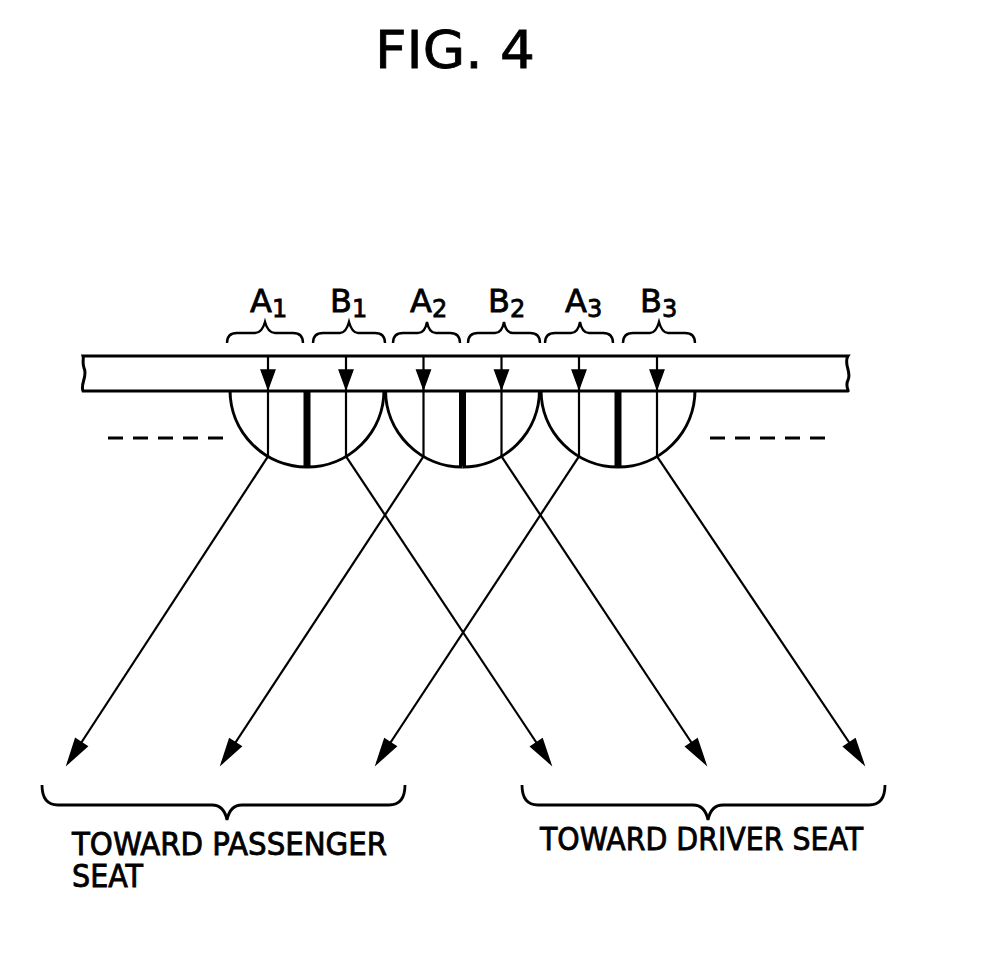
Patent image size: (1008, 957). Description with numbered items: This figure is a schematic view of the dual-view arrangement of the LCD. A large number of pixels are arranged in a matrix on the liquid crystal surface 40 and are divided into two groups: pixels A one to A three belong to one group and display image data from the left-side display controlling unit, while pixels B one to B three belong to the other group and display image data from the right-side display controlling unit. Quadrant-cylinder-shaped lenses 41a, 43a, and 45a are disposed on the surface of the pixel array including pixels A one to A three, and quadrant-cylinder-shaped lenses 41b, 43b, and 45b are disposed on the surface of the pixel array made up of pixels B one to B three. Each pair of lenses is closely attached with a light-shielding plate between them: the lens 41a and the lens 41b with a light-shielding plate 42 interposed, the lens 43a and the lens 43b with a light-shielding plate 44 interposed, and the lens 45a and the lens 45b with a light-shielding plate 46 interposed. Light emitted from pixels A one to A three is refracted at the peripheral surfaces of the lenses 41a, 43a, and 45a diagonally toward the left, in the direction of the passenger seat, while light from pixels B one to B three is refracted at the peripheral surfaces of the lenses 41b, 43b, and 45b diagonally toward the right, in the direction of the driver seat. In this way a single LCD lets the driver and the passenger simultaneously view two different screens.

The liquid crystal surface 40 is at (772, 368).
The quadrant-cylinder-shaped lens 41a is at (250, 402).
The quadrant-cylinder-shaped lens 41b is at (322, 413).
The light-shielding plate 42 is at (303, 446).
The quadrant-cylinder-shaped lens 43a is at (405, 412).
The quadrant-cylinder-shaped lens 43b is at (485, 412).
The light-shielding plate 44 is at (458, 446).
The quadrant-cylinder-shaped lens 45a is at (565, 412).
The quadrant-cylinder-shaped lens 45b is at (640, 412).
The light-shielding plate 46 is at (617, 446).